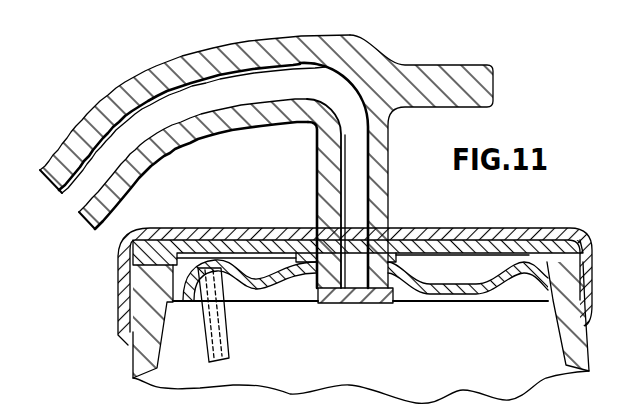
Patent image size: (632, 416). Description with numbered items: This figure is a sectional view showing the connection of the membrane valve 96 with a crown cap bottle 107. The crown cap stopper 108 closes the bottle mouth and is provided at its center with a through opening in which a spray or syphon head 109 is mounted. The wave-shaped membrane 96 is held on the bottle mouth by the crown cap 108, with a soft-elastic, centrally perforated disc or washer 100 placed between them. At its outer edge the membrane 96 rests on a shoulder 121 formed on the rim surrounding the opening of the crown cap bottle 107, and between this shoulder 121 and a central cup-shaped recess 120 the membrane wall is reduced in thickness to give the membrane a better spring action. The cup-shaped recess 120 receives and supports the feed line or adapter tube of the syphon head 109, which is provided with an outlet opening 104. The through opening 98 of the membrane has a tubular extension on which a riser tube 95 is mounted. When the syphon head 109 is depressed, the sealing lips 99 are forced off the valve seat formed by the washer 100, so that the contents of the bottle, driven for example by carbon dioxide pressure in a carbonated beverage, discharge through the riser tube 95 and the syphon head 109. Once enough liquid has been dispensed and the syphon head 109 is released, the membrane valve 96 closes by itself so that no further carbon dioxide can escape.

The outlet opening 104 is at (64, 201).
The spray or syphon head 109 is at (385, 158).
The crown cap bottle 107 is at (570, 228).
The shoulder 121 is at (537, 228).
The membrane valve 96 is at (495, 228).
The crown cap stopper 108 is at (462, 228).
The sealing lips 99 is at (305, 235).
The soft-elastic centrally perforated disc or washer 100 is at (432, 228).
The through opening 98 is at (228, 303).
The riser tube 95 is at (235, 352).
The cup-shaped recess 120 is at (334, 306).